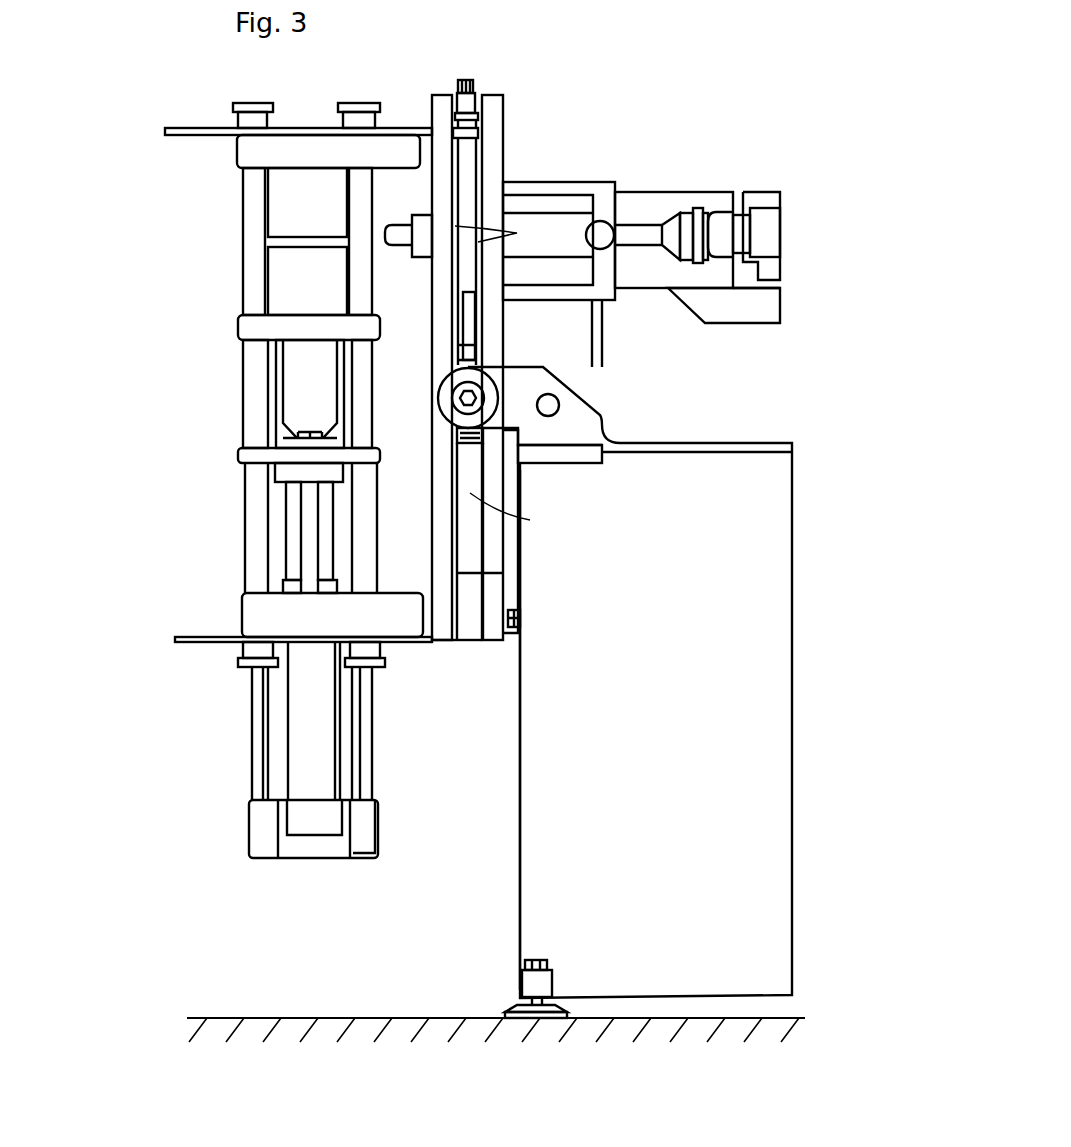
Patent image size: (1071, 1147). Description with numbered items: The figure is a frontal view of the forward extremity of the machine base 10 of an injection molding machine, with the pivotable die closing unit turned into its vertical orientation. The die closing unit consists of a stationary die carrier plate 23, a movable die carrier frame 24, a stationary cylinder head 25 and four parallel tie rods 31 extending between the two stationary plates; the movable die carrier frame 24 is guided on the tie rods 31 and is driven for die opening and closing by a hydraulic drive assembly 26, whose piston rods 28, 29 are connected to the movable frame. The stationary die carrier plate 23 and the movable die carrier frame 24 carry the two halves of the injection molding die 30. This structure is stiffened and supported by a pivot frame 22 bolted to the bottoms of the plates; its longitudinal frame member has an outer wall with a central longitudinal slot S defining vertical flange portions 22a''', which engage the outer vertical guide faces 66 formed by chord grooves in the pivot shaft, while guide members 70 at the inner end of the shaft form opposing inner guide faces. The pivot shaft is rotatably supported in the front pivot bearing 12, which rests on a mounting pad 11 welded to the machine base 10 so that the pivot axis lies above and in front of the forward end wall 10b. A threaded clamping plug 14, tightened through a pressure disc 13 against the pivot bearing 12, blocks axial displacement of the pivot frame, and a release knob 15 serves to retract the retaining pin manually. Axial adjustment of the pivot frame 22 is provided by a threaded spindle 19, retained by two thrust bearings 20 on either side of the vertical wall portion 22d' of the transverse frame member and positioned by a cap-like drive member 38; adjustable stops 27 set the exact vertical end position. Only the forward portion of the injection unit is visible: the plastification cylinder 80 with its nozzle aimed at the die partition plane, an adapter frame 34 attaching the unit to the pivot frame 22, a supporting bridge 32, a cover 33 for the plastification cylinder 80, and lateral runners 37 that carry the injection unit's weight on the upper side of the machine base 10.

The machine base 10 is at (557, 752).
The forward end wall 10b is at (520, 810).
The mounting pads 11 is at (567, 452).
The front pivot bearing 12 is at (577, 425).
The pressure disc 13 is at (455, 383).
The clamping plug 14 is at (468, 400).
The release knob 15 is at (552, 395).
The spindle 19 is at (470, 312).
The thrust bearings 20 is at (478, 137).
The pivot frame 22 is at (433, 536).
The vertical flange portions 22a''' is at (481, 675).
The vertical wall portion 22d' is at (419, 149).
The stationary die carrier plate 23 is at (258, 150).
The movable die carrier frame 24 is at (257, 457).
The stationary cylinder head 25 is at (272, 608).
The hydraulic drive assembly 26 is at (308, 823).
The adjustable stops 27 is at (522, 618).
The piston rod 28 is at (295, 512).
The piston rod 29 is at (309, 537).
The injection molding die 30 is at (292, 270).
The tie rods 31 is at (255, 282).
The supporting bridge 32 is at (760, 197).
The cover 33 is at (687, 197).
The adapter frame 34 is at (605, 195).
The lateral runners 37 is at (597, 342).
The drive member 38 is at (465, 80).
The outer vertical guide faces 66 is at (468, 573).
The guide members 70 is at (482, 355).
The plastification cylinder 80 is at (560, 232).
The longitudinal slot S is at (502, 380).